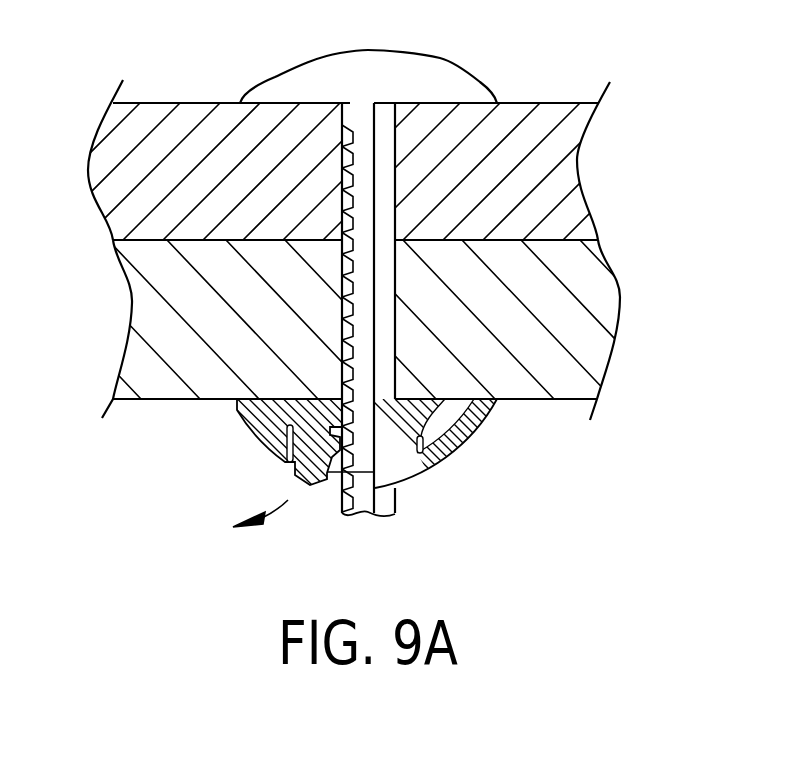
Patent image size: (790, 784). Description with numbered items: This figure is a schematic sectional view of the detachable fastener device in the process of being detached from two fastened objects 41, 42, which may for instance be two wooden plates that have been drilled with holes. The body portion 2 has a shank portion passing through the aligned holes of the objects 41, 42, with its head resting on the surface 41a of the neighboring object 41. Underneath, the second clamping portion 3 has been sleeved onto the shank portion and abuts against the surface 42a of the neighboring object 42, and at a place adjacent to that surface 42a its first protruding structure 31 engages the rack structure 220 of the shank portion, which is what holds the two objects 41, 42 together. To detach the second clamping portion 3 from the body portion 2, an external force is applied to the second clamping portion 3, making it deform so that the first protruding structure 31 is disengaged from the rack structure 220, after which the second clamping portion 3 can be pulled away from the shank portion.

The body portion 2 is at (286, 72).
The rack structure 220 is at (377, 481).
The second clamping portion 3 is at (474, 440).
The first protruding structure 31 is at (326, 478).
The object 41 is at (567, 178).
The surface 41a is at (165, 102).
The object 42 is at (585, 332).
The surface 42a is at (158, 402).